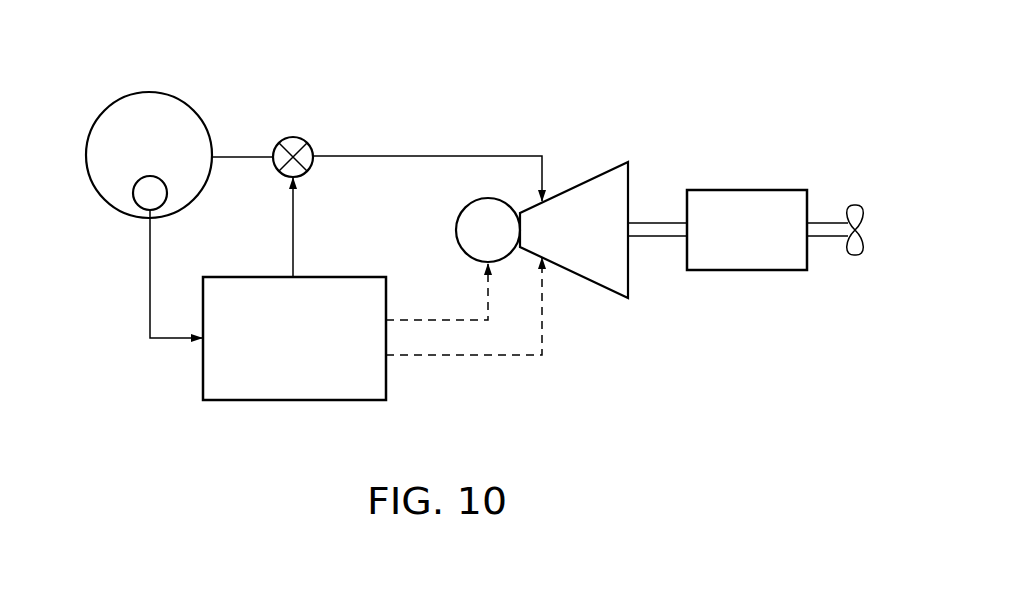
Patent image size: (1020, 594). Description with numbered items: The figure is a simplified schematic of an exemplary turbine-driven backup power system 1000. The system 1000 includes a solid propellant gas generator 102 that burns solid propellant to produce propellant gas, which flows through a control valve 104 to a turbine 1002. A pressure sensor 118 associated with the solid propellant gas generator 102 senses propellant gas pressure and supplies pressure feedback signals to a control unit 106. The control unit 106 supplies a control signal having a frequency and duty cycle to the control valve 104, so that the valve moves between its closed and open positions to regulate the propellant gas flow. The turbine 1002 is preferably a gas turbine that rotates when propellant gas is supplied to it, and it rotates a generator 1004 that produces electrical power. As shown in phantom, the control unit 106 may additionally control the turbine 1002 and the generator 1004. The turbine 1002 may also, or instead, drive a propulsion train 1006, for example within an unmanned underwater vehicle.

The turbine-driven backup power system 1000 is at (610, 73).
The solid propellant gas generator 102 is at (143, 92).
The pressure sensor 118 is at (133, 192).
The control valve 104 is at (293, 136).
The turbine 1002 is at (598, 177).
The generator 1004 is at (455, 228).
The propulsion train 1006 is at (748, 190).
The control unit 106 is at (203, 380).